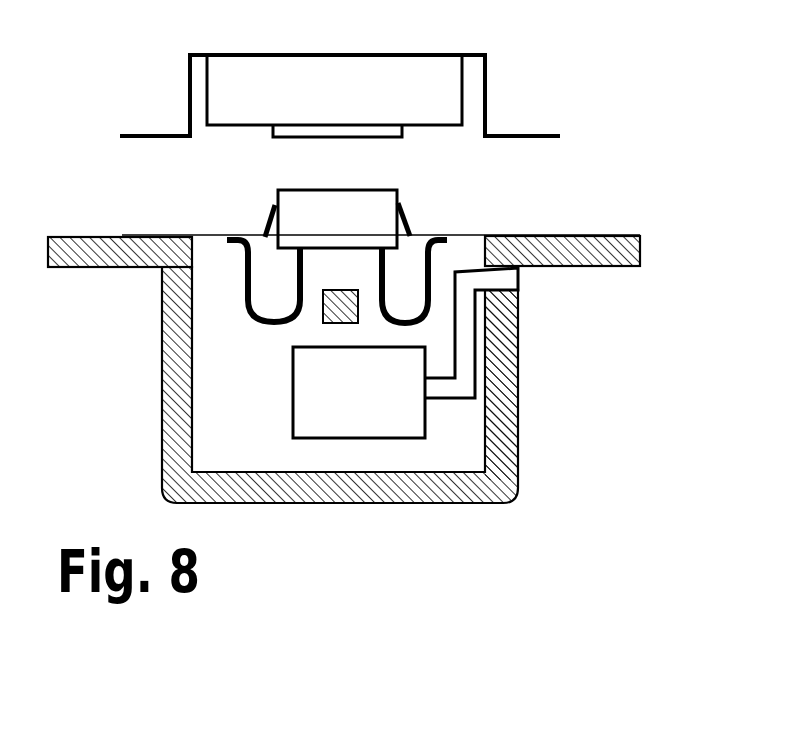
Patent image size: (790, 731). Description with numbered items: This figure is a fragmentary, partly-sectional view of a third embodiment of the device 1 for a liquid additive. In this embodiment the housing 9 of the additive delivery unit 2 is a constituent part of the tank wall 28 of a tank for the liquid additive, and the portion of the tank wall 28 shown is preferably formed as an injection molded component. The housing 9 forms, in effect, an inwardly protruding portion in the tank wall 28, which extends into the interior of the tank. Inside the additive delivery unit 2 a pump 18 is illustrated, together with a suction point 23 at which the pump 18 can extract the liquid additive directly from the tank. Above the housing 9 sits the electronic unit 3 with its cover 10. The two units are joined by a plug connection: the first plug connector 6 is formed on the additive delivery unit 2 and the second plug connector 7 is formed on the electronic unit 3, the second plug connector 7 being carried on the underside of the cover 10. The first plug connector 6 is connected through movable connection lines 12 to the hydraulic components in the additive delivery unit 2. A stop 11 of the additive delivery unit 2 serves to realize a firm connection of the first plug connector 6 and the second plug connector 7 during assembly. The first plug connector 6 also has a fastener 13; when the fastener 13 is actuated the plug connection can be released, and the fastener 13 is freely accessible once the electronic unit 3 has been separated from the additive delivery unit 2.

The device 1 is at (597, 97).
The additive delivery unit 2 is at (546, 480).
The electronic unit 3 is at (180, 34).
The first plug connector 6 is at (278, 192).
The second plug connector 7 is at (402, 132).
The housing 9 is at (518, 337).
The cover 10 is at (485, 90).
The stop 11 is at (323, 325).
The movable connection lines 12 is at (250, 285).
The fastener 13 is at (412, 225).
The pump 18 is at (375, 438).
The suction point 23 is at (518, 280).
The tank wall 28 is at (615, 265).